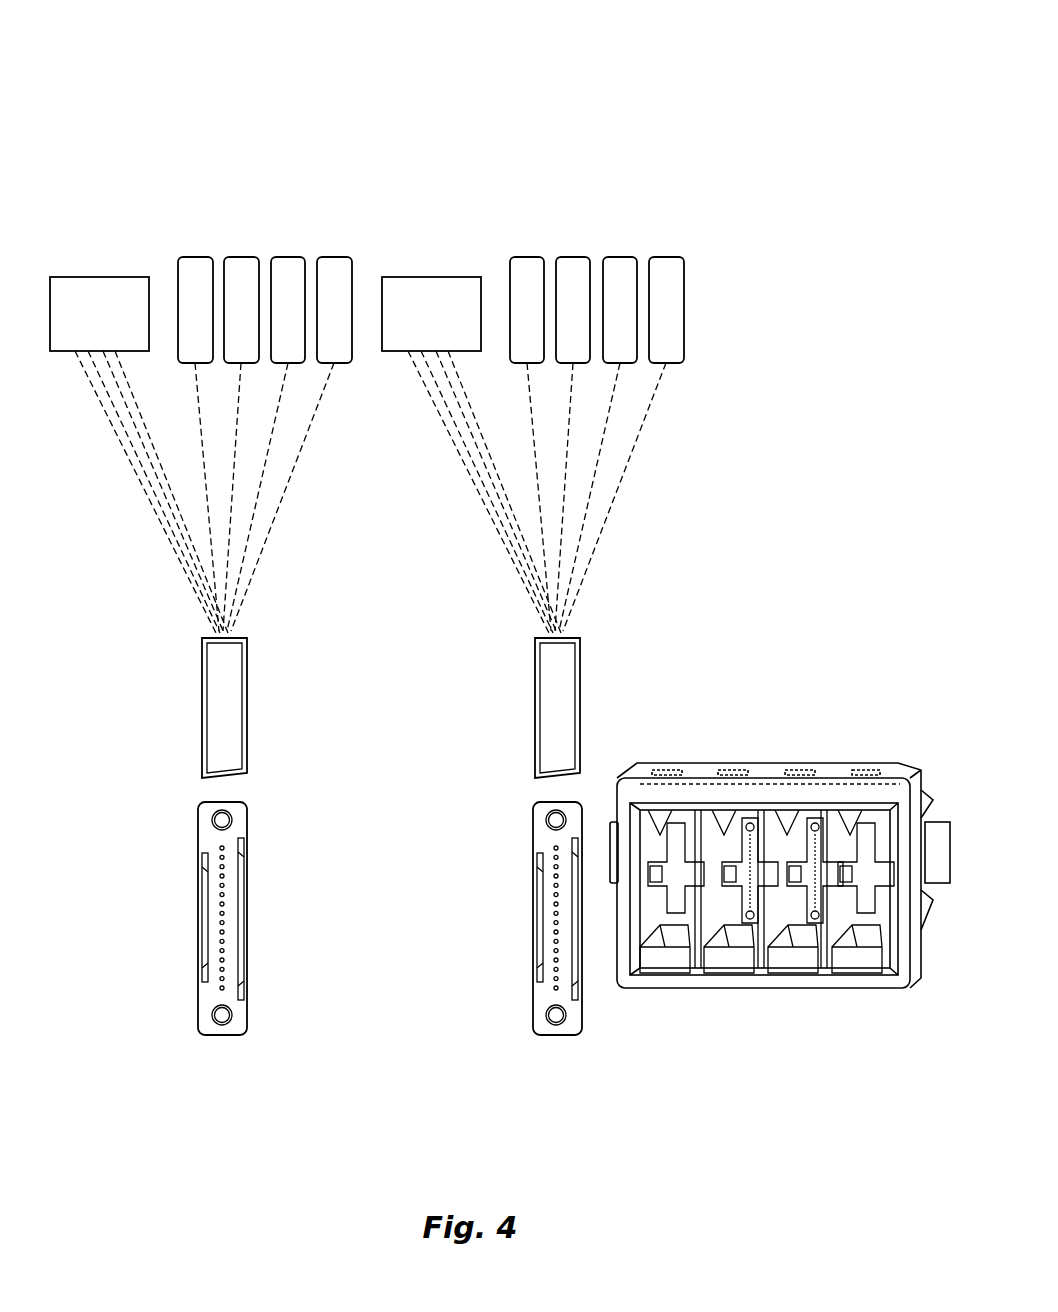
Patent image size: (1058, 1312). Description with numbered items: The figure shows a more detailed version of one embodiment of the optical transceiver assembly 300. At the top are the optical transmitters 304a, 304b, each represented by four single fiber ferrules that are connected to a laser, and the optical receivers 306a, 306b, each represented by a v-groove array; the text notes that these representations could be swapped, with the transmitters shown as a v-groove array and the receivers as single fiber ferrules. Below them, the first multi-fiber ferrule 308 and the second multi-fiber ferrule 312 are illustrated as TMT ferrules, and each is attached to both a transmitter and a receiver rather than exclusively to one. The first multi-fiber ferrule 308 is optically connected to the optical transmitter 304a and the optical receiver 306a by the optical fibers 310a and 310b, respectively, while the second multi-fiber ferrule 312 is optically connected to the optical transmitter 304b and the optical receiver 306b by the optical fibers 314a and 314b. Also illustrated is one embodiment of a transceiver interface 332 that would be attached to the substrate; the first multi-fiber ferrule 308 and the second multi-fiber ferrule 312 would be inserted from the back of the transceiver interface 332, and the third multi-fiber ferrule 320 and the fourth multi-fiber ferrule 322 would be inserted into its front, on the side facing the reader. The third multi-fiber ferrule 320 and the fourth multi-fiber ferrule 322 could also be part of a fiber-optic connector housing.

The optical transceiver assembly 300 is at (657, 82).
The optical transmitter 304a is at (503, 238).
The optical transmitter 304b is at (170, 238).
The optical receiver 306a is at (437, 277).
The optical receiver 306b is at (105, 277).
The first multi-fiber ferrule 308 is at (582, 696).
The optical fibers 310a is at (620, 476).
The optical fibers 310b is at (473, 476).
The second multi-fiber ferrule 312 is at (248, 696).
The optical fibers 314a is at (287, 476).
The optical fibers 314b is at (140, 476).
The third multi-fiber ferrule 320 is at (532, 1014).
The fourth multi-fiber ferrule 322 is at (240, 1014).
The transceiver interface 332 is at (806, 762).